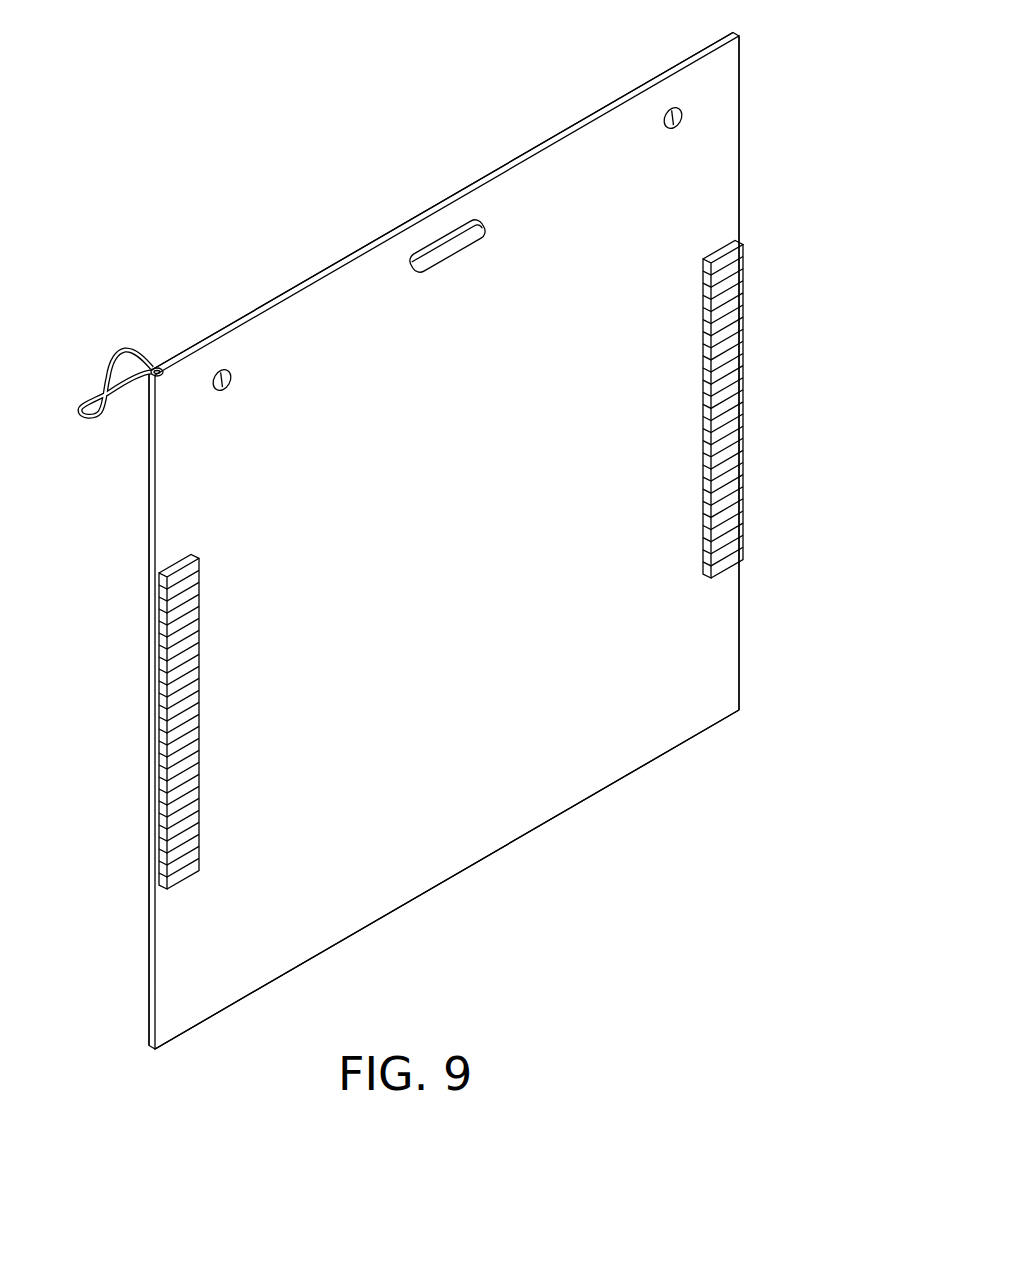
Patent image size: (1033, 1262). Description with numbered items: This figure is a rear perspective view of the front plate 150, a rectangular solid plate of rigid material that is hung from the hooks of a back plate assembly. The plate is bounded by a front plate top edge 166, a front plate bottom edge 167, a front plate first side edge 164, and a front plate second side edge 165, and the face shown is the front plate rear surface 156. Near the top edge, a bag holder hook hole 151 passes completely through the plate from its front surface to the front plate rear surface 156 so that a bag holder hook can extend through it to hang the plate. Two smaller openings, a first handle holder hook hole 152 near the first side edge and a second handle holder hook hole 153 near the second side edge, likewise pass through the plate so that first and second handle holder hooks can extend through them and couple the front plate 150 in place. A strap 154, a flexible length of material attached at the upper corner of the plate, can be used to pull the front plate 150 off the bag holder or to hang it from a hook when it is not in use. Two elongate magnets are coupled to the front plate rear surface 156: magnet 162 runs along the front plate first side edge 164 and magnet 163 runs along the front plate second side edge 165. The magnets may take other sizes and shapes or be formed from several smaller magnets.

The front plate 150 is at (305, 90).
The bag holder hook hole 151 is at (448, 241).
The first handle holder hook hole 152 is at (673, 131).
The second handle holder hook hole 153 is at (228, 394).
The strap 154 is at (120, 352).
The front plate rear surface 156 is at (466, 537).
The magnet 162 is at (735, 356).
The magnet 163 is at (176, 694).
The front plate first side edge 164 is at (742, 146).
The front plate second side edge 165 is at (151, 533).
The front plate top edge 166 is at (322, 272).
The front plate bottom edge 167 is at (513, 842).